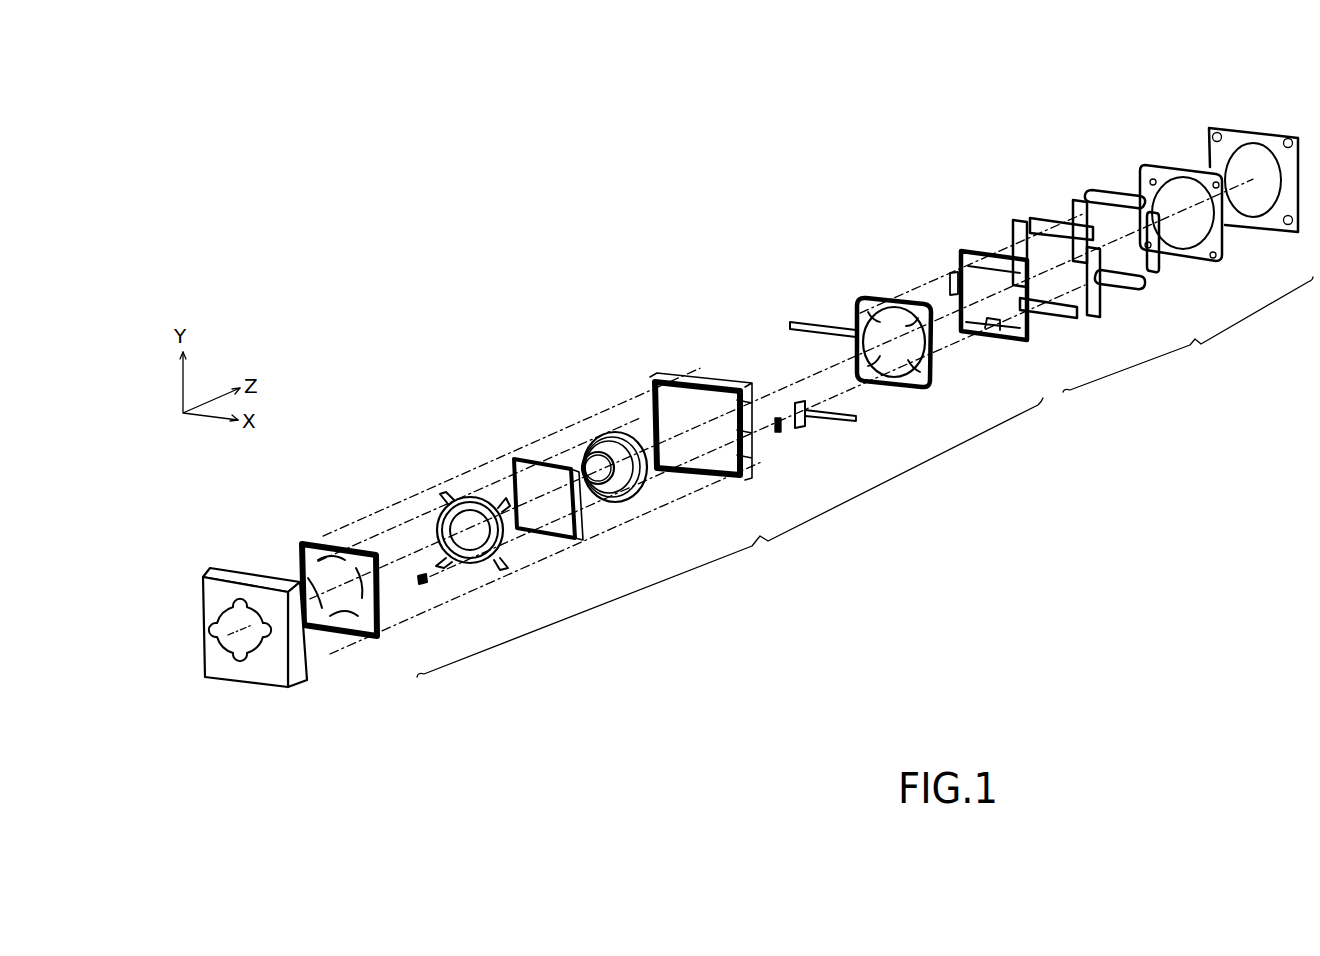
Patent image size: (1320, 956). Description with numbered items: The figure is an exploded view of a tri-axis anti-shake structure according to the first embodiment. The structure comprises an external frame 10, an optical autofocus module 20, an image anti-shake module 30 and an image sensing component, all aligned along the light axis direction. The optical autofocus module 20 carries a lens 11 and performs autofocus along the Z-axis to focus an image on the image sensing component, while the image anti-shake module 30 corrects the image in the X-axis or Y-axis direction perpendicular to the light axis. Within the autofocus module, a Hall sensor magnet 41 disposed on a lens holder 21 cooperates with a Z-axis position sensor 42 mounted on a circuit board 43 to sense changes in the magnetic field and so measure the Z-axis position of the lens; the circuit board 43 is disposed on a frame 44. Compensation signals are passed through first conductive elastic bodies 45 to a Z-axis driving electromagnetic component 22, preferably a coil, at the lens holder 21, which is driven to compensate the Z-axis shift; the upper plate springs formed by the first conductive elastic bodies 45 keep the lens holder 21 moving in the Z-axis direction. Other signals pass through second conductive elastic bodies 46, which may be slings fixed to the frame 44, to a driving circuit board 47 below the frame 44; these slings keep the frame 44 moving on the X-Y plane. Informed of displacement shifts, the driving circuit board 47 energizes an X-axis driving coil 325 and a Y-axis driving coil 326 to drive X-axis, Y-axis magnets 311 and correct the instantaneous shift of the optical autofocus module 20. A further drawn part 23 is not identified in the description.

The external frame 10 is at (300, 690).
The lens 11 is at (585, 402).
The optical autofocus module 20 is at (730, 537).
The lens holder 21 is at (433, 482).
The Z-axis driving electromagnetic component 22 is at (515, 440).
The rod 23 is at (815, 320).
The image anti-shake module 30 is at (1188, 334).
The Hall sensor magnet 41 is at (427, 582).
The Z-axis position sensor 42 is at (777, 433).
The circuit board 43 is at (812, 427).
The frame 44 is at (660, 372).
The first conductive elastic bodies 45 is at (320, 530).
The second conductive elastic body 46 is at (895, 275).
The driving circuit board 47 is at (1185, 158).
The X-axis, Y-axis magnets 311 is at (1052, 215).
The X-axis driving coil 325 is at (1158, 265).
The Y-axis driving coil 326 is at (1115, 187).